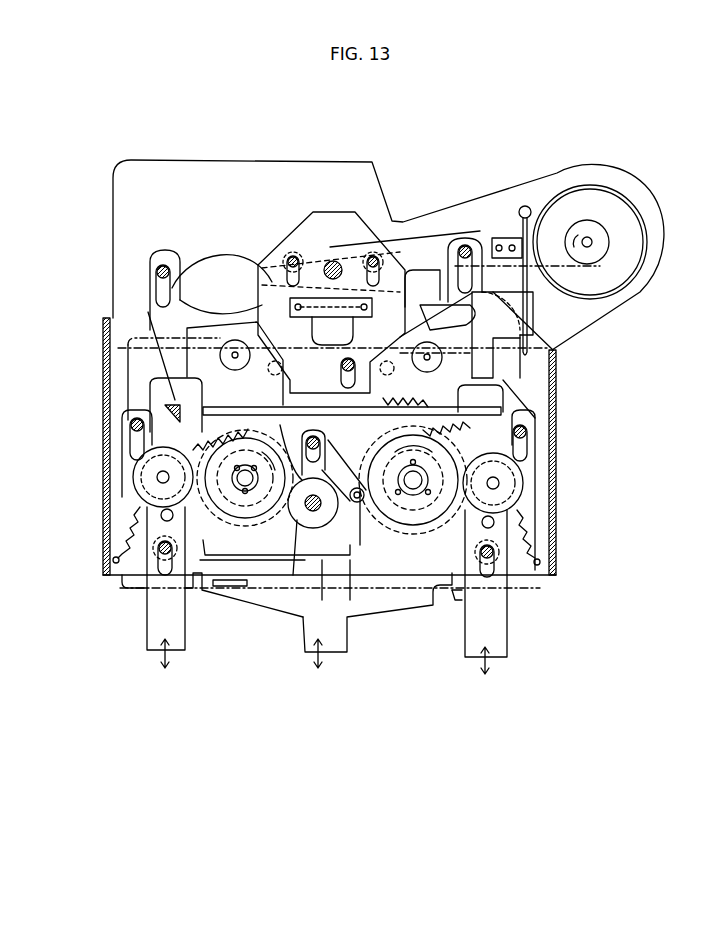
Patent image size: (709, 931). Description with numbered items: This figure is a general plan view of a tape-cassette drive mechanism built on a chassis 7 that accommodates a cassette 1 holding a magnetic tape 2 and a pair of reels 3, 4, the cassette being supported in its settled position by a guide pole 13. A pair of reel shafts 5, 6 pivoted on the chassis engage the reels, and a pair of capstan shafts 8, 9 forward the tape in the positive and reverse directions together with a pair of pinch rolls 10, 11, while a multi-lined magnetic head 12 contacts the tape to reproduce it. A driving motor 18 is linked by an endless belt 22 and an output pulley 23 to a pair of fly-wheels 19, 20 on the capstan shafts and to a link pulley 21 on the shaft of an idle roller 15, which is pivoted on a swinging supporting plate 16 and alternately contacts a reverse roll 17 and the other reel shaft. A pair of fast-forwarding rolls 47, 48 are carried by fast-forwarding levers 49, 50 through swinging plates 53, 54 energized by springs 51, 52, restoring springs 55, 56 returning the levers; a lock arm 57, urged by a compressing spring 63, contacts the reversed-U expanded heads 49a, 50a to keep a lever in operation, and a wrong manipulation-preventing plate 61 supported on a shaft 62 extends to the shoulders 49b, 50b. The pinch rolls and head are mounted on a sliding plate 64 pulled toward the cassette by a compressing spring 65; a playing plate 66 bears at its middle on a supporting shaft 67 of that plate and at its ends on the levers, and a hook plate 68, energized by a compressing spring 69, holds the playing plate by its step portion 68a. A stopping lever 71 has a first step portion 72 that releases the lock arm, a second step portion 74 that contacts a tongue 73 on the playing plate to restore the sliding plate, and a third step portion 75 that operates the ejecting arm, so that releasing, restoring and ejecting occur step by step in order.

The cassette 1 is at (130, 351).
The magnetic tape 2 is at (150, 350).
The reel 3 is at (297, 520).
The reel 4 is at (395, 545).
The reel shaft 5 is at (250, 490).
The reel shaft 6 is at (425, 548).
The chassis 7 is at (100, 545).
The capstan shaft 8 is at (230, 372).
The capstan shaft 9 is at (416, 367).
The pinch roll 10 is at (215, 305).
The pinch roll 11 is at (500, 343).
The multi-lined magnetic head 12 is at (333, 325).
The guide pole 13 is at (237, 307).
The idle roller 15 is at (350, 640).
The swinging supporting plate 16 is at (342, 475).
The reverse roll 17 is at (302, 600).
The driving motor 18 is at (591, 197).
The fly-wheel 19 is at (199, 290).
The fly-wheel 20 is at (420, 282).
The link pulley 21 is at (385, 545).
The endless belt 22 is at (573, 218).
The output pulley 23 is at (598, 236).
The fast-forwarding roll 47 is at (140, 468).
The fast-forwarding roll 48 is at (507, 497).
The fast-forwarding lever 49 is at (150, 632).
The expanded head 49a is at (140, 410).
The shoulder 49b is at (193, 598).
The fast-forwarding lever 50 is at (495, 647).
The expanded head 50a is at (535, 418).
The shoulder 50b is at (455, 600).
The spring 51 is at (236, 478).
The spring 52 is at (525, 440).
The swinging plate 53 is at (140, 488).
The swinging plate 54 is at (553, 550).
The restoring spring 55 is at (125, 560).
The restoring spring 56 is at (533, 580).
The lock arm 57 is at (242, 365).
The wrong manipulation-preventing plate 61 is at (250, 550).
The shaft 62 is at (382, 620).
The compressing spring 63 is at (415, 405).
The sliding plate 64 is at (340, 225).
The compressing spring 65 is at (325, 400).
The playing plate 66 is at (150, 315).
The supporting shaft 67 is at (333, 261).
The hook plate 68 is at (500, 288).
The step portion 68a is at (505, 318).
The compressing spring 69 is at (525, 206).
The stopping lever 71 is at (322, 650).
The first step portion 72 is at (482, 395).
The tongue 73 is at (432, 300).
The second step portion 74 is at (430, 263).
The third step portion 75 is at (233, 587).